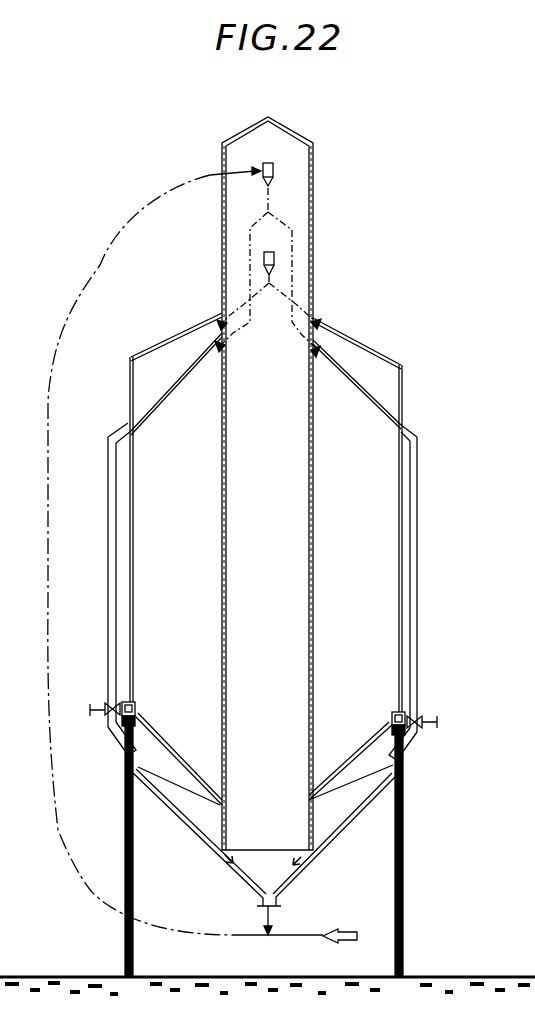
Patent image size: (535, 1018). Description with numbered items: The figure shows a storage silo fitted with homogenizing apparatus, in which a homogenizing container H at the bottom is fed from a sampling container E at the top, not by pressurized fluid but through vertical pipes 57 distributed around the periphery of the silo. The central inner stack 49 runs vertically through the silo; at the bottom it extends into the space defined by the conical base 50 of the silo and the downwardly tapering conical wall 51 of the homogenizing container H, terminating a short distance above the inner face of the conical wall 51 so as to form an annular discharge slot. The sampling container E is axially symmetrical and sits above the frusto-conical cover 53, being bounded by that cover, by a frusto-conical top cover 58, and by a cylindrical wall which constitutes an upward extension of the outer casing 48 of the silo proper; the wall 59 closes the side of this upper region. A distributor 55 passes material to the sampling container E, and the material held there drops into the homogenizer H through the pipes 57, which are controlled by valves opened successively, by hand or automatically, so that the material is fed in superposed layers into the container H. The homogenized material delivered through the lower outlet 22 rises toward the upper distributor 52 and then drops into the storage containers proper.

The lower outlet 22 is at (257, 900).
The outer casing 48 is at (402, 515).
The stack 49 is at (313, 588).
The conical base 50 is at (350, 762).
The conical wall 51 is at (313, 858).
The distributor 52 is at (273, 170).
The frusto-conical cover 53 is at (348, 378).
The distributor 55 is at (274, 260).
The vertical pipes 57 is at (418, 605).
The frusto-conical top cover 58 is at (358, 342).
The side wall 59 is at (403, 378).
The sampling container E is at (404, 390).
The homogenizing container H is at (368, 804).